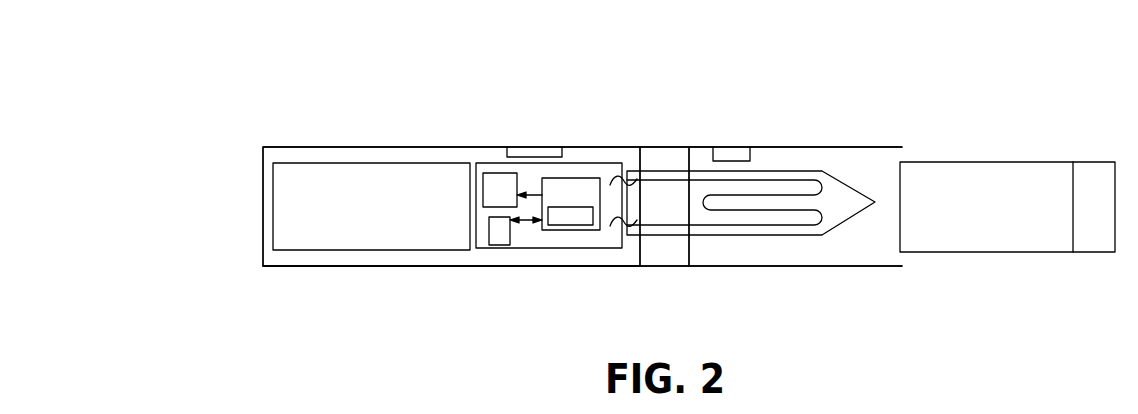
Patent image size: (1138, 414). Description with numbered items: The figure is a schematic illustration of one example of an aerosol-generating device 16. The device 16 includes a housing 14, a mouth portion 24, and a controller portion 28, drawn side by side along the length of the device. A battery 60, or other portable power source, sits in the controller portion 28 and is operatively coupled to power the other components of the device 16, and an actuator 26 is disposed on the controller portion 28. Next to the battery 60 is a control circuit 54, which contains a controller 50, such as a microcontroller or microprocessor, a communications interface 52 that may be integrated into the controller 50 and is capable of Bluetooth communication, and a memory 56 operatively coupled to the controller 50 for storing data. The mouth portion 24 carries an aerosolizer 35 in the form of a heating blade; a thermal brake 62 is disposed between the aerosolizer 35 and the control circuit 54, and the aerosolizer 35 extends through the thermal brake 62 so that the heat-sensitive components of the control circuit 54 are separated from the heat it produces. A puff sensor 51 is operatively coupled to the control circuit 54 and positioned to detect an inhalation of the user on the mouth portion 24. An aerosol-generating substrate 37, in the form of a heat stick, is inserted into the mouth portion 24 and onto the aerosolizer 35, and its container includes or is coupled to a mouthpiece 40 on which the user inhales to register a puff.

The aerosol-generating device 16 is at (432, 90).
The housing 14 is at (277, 143).
The controller portion 28 is at (277, 272).
The battery 60 is at (362, 217).
The control circuit 54 is at (567, 254).
The memory 56 is at (503, 243).
The controller 50 is at (583, 192).
The communications interface 52 is at (558, 213).
The actuator 26 is at (541, 146).
The mouth portion 24 is at (878, 138).
The thermal brake 62 is at (662, 255).
The puff sensor 51 is at (735, 153).
The aerosolizer 35 is at (782, 165).
The aerosol-generating substrate 37 is at (993, 160).
The mouthpiece 40 is at (1099, 240).